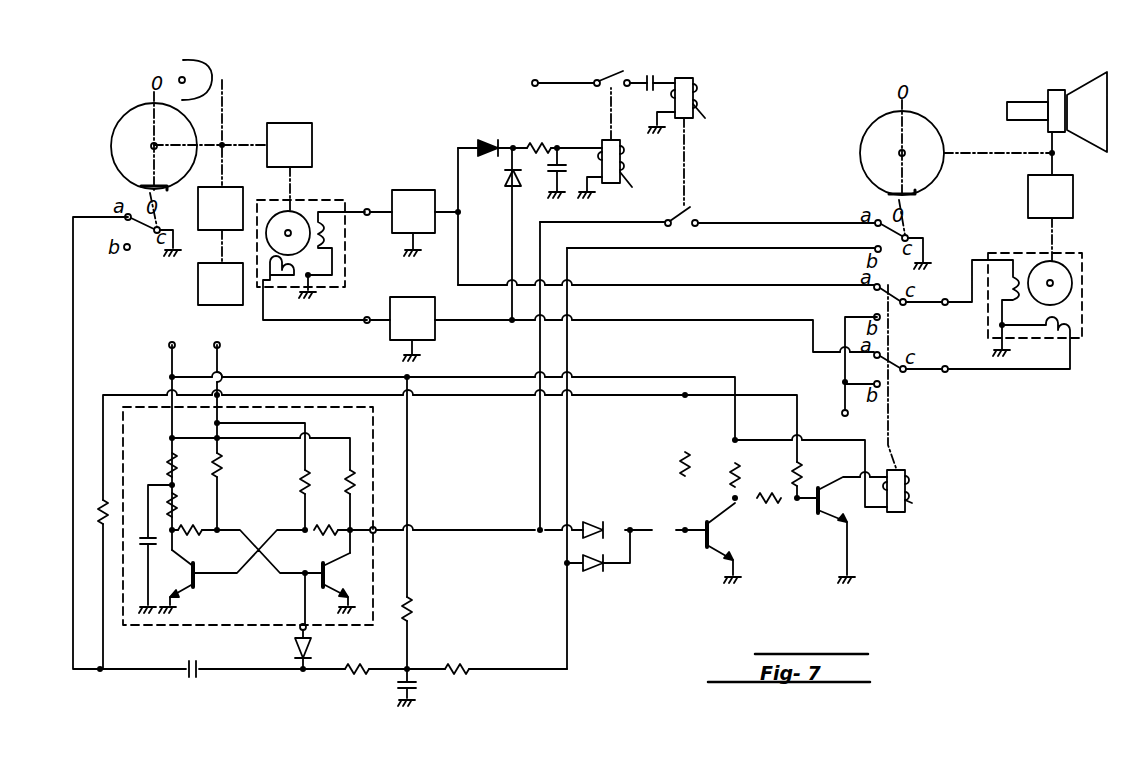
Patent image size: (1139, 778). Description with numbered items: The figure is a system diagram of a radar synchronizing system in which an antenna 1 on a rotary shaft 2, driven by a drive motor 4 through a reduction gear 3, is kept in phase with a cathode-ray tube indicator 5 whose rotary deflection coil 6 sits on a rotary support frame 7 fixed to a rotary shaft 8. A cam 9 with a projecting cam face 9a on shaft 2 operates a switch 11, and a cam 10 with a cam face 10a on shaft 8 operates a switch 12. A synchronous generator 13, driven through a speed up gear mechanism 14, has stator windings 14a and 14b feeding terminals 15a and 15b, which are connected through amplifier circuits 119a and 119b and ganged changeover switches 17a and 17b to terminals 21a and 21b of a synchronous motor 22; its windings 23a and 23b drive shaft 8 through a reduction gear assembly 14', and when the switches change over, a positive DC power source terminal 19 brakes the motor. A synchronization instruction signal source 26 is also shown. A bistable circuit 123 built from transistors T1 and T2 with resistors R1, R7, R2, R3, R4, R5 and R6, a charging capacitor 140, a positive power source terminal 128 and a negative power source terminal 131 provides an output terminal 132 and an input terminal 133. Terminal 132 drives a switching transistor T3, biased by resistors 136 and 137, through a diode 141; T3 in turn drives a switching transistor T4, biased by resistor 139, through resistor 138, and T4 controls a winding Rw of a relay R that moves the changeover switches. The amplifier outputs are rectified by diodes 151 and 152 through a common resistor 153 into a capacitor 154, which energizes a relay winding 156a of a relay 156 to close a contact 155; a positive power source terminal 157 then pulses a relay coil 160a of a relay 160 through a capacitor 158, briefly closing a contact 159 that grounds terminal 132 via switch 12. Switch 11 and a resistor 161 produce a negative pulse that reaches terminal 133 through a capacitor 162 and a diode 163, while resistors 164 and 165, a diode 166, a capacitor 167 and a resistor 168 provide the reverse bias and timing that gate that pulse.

The antenna 1 is at (196, 60).
The rotary shaft 2 is at (226, 112).
The reduction gear 3 is at (228, 185).
The drive motor 4 is at (228, 262).
The cathode-ray tube indicator 5 is at (1096, 72).
The rotary deflection coil 6 is at (1058, 88).
The rotary support frame 7 is at (1048, 92).
The rotary shaft 8 is at (1058, 153).
The cam 9 is at (126, 112).
The projecting cam face 9a is at (129, 182).
The cam 10 is at (876, 122).
The projecting cam face 10a is at (918, 192).
The switch 11 is at (156, 271).
The switch 12 is at (938, 234).
The synchronous generator 13 is at (313, 200).
The speed up gear mechanism 14 is at (304, 167).
The reduction gear assembly 14' is at (1073, 218).
The stator winding 14a is at (336, 240).
The stator winding 14b is at (286, 276).
The terminal 15a is at (374, 198).
The terminal 15b is at (372, 306).
The changeover switch 17a is at (930, 336).
The changeover switch 17b is at (933, 404).
The positive DC power source terminal 19 is at (841, 419).
The terminal 21a is at (951, 291).
The terminal 21b is at (950, 359).
The synchronous motor 22 is at (1083, 288).
The stator winding 23a is at (1010, 295).
The stator winding 23b is at (1052, 325).
The synchronization instruction signal source 26 is at (596, 120).
The amplifier circuit 119a is at (416, 182).
The amplifier circuit 119b is at (415, 289).
The bistable circuit 123 is at (160, 656).
The positive power source terminal 128 is at (174, 333).
The negative power source terminal 131 is at (225, 333).
The output terminal 132 is at (375, 533).
The input terminal 133 is at (307, 630).
The resistor 136 is at (730, 470).
The resistor 137 is at (680, 458).
The resistor 138 is at (768, 505).
The resistor 139 is at (792, 468).
The charging capacitor 140 is at (161, 549).
The diode 141 is at (602, 515).
The diode 151 is at (488, 140).
The diode 152 is at (500, 180).
The common resistor 153 is at (539, 143).
The capacitor 154 is at (545, 170).
The contact 155 is at (610, 62).
The relay 156 is at (667, 177).
The relay winding 156a is at (648, 190).
The positive power source terminal 157 is at (535, 80).
The capacitor 158 is at (655, 76).
The contact 159 is at (693, 208).
The relay 160 is at (744, 97).
The relay coil 160a is at (723, 121).
The resistor 161 is at (88, 525).
The capacitor 162 is at (205, 650).
The diode 163 is at (294, 646).
The resistor 164 is at (412, 603).
The resistor 165 is at (462, 656).
The diode 166 is at (598, 571).
The capacitor 167 is at (396, 687).
The resistor 168 is at (352, 663).
The relay R is at (938, 470).
The relay winding Rw is at (912, 503).
The resistor R1 is at (157, 461).
The resistor R2 is at (337, 477).
The resistor R3 is at (203, 544).
The resistor R4 is at (317, 543).
The resistor R5 is at (291, 477).
The resistor R6 is at (230, 469).
The resistor R7 is at (177, 505).
The transistor T1 is at (189, 581).
The transistor T2 is at (331, 587).
The switching transistor T3 is at (713, 543).
The switching transistor T4 is at (842, 527).